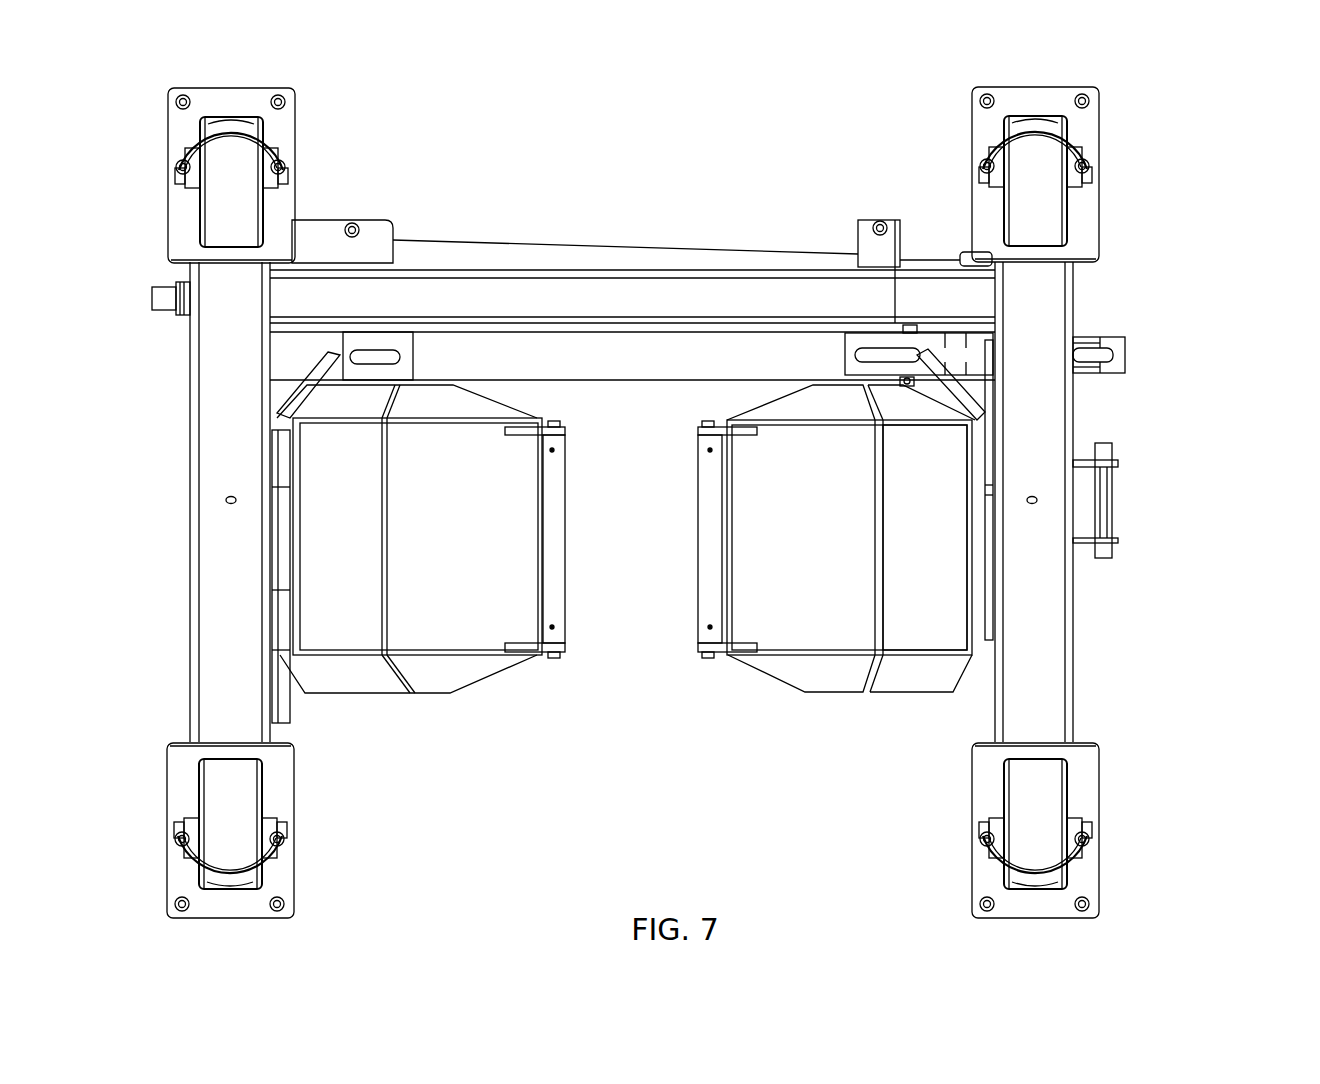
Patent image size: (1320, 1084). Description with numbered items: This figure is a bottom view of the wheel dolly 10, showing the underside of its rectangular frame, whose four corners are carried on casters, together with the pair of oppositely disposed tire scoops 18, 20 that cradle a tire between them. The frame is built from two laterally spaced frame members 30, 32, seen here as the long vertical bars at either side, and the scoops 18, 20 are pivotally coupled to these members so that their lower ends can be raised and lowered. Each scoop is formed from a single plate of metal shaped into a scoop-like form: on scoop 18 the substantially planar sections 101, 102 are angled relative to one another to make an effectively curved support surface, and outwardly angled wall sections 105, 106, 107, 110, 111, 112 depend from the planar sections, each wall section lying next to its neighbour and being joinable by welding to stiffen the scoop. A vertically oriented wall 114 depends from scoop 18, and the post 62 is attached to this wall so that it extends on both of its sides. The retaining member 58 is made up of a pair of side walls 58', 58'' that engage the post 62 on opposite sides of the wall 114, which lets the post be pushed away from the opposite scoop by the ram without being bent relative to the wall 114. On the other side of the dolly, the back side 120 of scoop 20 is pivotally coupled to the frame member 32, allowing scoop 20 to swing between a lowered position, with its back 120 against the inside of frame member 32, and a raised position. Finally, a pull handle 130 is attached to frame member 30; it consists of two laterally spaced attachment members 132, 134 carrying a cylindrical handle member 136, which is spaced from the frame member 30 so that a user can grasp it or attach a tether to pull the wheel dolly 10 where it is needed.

The wheel dolly 10 is at (1112, 184).
The tire support structure or scoop 18 is at (805, 692).
The tire support structure or scoop 20 is at (432, 683).
The frame member 30 is at (1072, 722).
The frame member 32 is at (268, 450).
The retaining member 58 is at (1169, 358).
The side wall 58' is at (1164, 392).
The side wall 58'' is at (1186, 328).
The post 62 is at (905, 384).
The planar section 101 is at (743, 623).
The planar section 102 is at (930, 620).
The wall section 105 is at (835, 670).
The wall section 106 is at (905, 682).
The wall section 107 is at (985, 665).
The wall section 110 is at (962, 397).
The wall section 111 is at (910, 408).
The wall section 112 is at (788, 408).
The vertically oriented wall 114 is at (888, 350).
The back side of the scoop 120 is at (278, 620).
The pull handle 130 is at (1105, 443).
The attachment member 132 is at (1112, 540).
The attachment member 134 is at (1105, 462).
The handle member 136 is at (1105, 505).